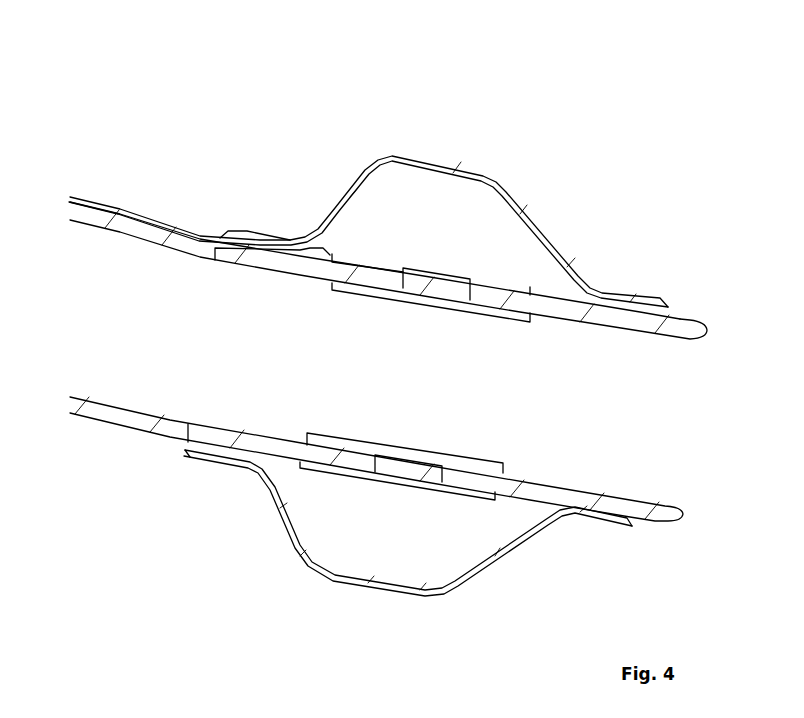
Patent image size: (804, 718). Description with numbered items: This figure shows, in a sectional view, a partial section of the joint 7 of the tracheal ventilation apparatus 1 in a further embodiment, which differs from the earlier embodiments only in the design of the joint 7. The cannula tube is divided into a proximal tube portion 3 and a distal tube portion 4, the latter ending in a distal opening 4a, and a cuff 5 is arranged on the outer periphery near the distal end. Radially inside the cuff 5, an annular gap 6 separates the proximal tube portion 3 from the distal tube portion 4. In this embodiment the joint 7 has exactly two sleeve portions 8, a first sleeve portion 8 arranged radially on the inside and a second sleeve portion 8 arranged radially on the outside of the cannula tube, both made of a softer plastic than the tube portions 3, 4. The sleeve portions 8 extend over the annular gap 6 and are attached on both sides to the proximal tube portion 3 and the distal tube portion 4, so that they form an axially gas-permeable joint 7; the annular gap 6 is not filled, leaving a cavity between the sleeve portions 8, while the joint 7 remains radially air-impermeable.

The tracheal ventilation apparatus 1 is at (246, 156).
The proximal tube portion 3 is at (118, 427).
The distal tube portion 4 is at (630, 507).
The distal opening 4a is at (685, 418).
The cuff 5 is at (460, 170).
The annular gap 6 is at (440, 292).
The joint 7 is at (410, 380).
The sleeve portion 8 is at (407, 267).